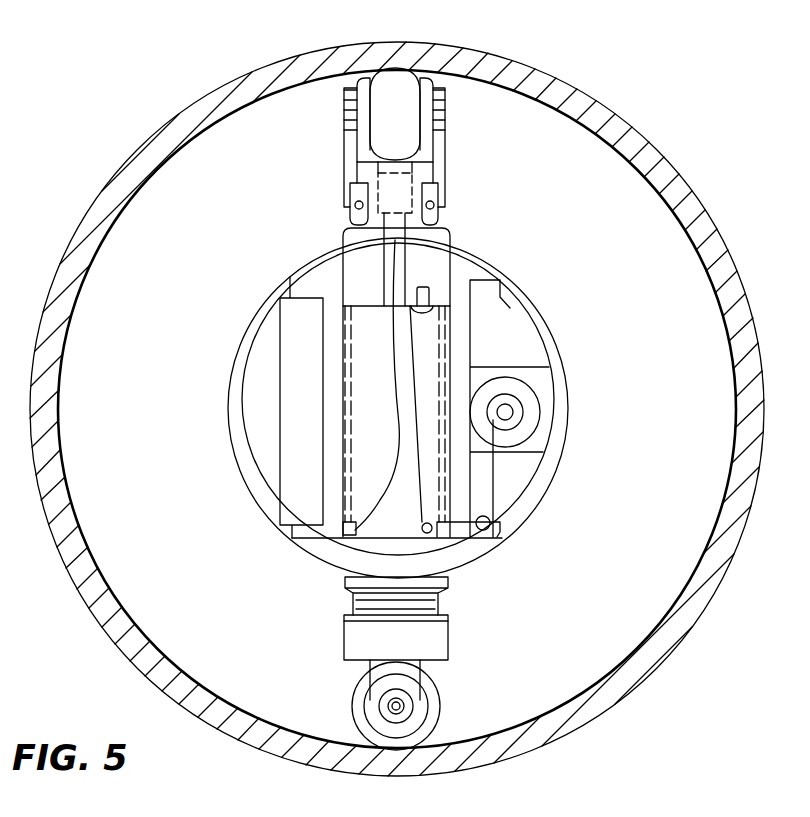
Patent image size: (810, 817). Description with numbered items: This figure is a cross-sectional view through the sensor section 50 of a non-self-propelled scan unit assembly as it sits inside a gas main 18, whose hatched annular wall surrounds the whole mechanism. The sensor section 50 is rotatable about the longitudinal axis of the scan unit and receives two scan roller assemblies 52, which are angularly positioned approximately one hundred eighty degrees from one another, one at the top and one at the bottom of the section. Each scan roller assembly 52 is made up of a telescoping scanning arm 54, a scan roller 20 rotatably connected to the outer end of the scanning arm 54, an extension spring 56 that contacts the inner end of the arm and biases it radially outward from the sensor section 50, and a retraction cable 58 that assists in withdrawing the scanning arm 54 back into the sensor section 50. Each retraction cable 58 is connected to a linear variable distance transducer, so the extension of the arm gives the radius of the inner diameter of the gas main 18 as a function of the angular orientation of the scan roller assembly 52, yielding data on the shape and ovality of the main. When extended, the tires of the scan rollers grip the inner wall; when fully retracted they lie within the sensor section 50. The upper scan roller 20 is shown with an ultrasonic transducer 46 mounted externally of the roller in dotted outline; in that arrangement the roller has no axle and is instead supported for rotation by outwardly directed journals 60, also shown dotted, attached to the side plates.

The gas main 18 is at (623, 120).
The scan roller 20 is at (407, 83).
The ultrasonic transducer 46 is at (390, 190).
The sensor section 50 is at (554, 381).
The scan roller assembly 52 is at (448, 211).
The telescoping scanning arm 54 is at (440, 237).
The extension spring 56 is at (440, 335).
The retraction cable 58 is at (495, 473).
The journal 60 is at (440, 112).